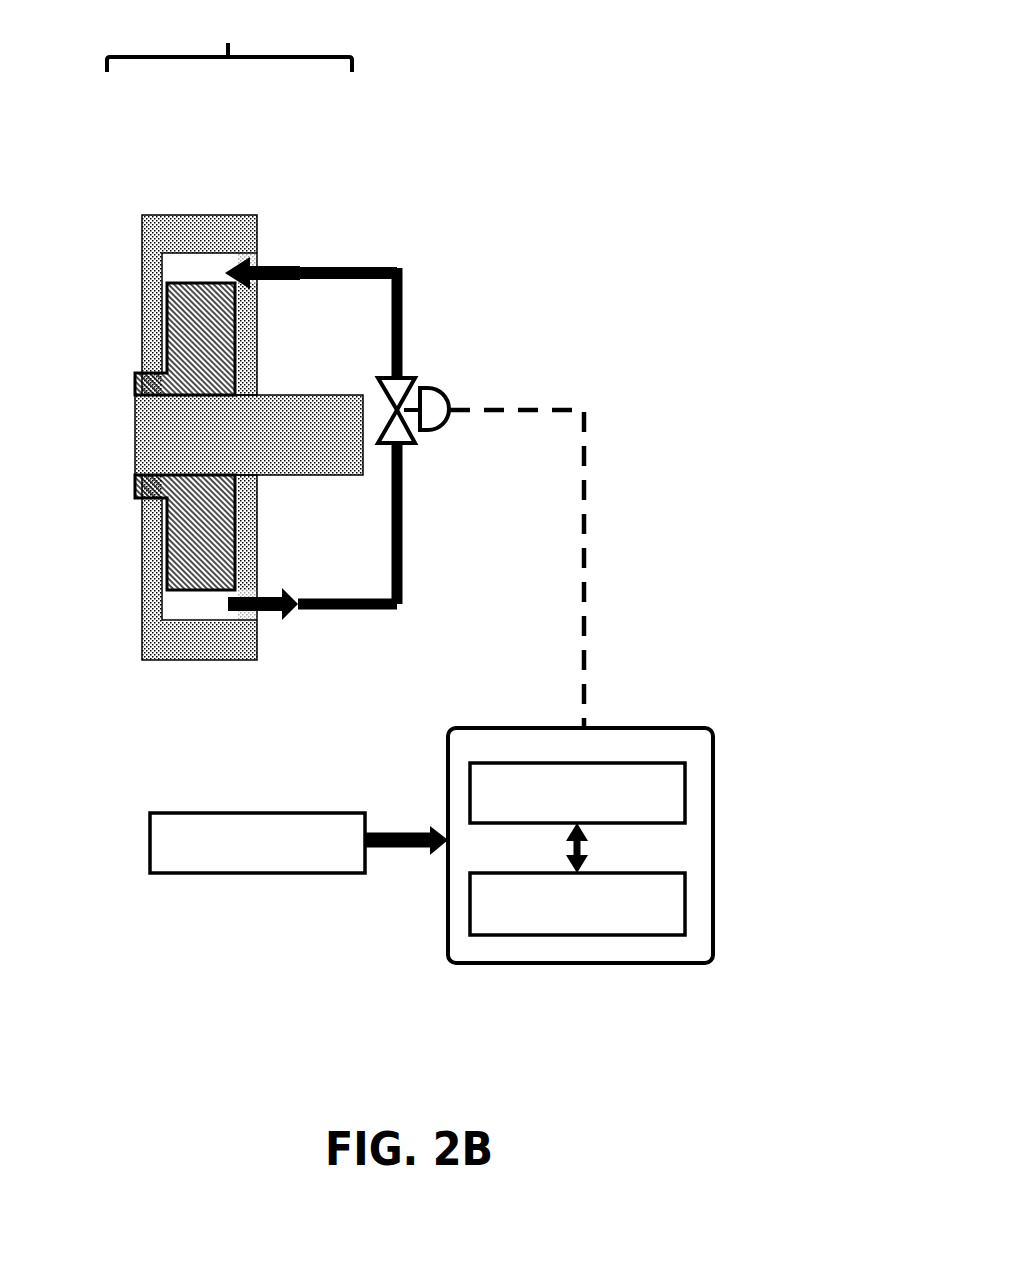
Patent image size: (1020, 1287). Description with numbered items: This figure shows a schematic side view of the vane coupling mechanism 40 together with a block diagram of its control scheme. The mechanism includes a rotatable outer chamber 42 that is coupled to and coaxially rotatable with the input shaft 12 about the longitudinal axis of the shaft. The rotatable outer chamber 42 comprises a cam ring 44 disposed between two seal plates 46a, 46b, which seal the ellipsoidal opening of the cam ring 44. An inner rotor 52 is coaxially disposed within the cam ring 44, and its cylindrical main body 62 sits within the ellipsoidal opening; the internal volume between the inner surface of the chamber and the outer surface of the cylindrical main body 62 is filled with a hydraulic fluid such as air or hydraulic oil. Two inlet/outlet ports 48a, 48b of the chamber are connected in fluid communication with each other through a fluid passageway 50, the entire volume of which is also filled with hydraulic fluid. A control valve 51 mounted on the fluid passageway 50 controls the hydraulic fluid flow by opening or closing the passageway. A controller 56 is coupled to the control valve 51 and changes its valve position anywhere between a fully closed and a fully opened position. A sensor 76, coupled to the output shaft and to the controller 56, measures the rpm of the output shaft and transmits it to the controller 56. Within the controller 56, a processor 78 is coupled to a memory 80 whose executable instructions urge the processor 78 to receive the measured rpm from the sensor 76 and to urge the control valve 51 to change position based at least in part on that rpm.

The vane coupling mechanism 40 is at (229, 37).
The rotatable outer chamber 42 is at (174, 202).
The cam ring 44 is at (200, 234).
The seal plate 46a is at (256, 325).
The seal plate 46b is at (143, 298).
The inlet/outlet port 48a is at (270, 616).
The inlet/outlet port 48b is at (278, 262).
The fluid passageway 50 is at (402, 310).
The control valve 51 is at (428, 376).
The inner rotor 52 is at (168, 262).
The cylindrical main body 62 is at (176, 530).
The input shaft 12 is at (295, 478).
The controller 56 is at (666, 728).
The sensor 76 is at (216, 813).
The processor 78 is at (686, 793).
The memory 80 is at (686, 905).